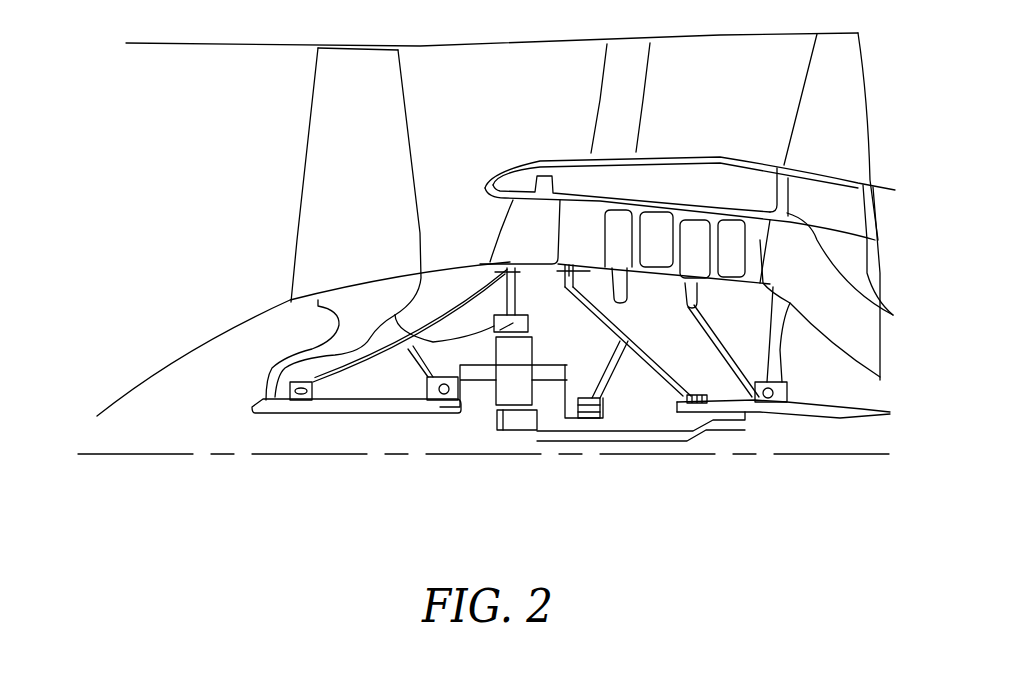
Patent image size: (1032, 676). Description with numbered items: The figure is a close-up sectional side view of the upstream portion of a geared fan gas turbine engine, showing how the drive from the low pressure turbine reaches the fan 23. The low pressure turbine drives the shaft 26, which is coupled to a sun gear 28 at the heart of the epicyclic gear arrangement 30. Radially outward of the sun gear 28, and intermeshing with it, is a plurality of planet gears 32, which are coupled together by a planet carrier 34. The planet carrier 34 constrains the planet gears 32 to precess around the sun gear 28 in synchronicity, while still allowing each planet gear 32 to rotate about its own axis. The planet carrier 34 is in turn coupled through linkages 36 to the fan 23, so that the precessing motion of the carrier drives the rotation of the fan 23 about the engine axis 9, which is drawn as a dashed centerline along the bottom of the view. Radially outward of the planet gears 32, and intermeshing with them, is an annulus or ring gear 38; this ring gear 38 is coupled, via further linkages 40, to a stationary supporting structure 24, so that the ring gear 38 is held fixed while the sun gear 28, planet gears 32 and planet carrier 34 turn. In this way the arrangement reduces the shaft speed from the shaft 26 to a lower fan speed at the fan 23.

The engine axis 9 is at (187, 455).
The fan 23 is at (318, 155).
The stationary supporting structure 24 is at (517, 232).
The shaft 26 is at (640, 437).
The sun gear 28 is at (515, 420).
The epicyclic gear arrangement 30 is at (481, 407).
The planet gears 32 is at (494, 410).
The planet carrier 34 is at (565, 397).
The linkages 36 is at (473, 402).
The ring gear 38 is at (317, 305).
The linkages 40 is at (507, 297).